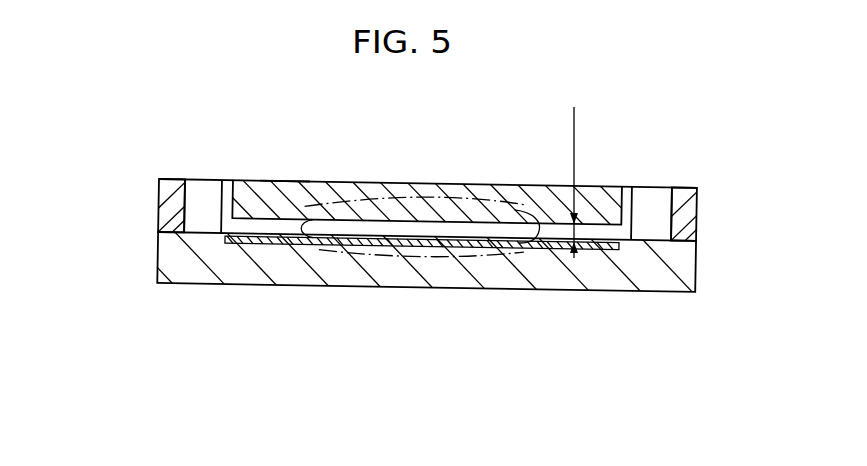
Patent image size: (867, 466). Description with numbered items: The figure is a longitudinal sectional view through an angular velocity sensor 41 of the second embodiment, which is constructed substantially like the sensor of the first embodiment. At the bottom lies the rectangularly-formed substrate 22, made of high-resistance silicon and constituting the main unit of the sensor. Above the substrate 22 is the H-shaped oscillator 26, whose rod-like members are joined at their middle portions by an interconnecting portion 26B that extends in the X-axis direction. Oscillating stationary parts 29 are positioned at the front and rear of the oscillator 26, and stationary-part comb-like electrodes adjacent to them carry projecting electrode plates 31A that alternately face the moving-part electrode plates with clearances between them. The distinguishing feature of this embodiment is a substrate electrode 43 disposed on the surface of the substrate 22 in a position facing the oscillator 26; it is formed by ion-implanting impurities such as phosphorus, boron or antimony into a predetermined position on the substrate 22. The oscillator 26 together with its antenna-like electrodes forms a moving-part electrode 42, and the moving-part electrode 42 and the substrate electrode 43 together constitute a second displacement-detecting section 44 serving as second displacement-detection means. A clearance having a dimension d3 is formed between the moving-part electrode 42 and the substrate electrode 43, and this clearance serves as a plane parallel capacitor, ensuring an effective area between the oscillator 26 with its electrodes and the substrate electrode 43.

The substrate 22 is at (610, 284).
The oscillator 26 is at (382, 182).
The interconnecting portion 26B is at (285, 180).
The oscillating stationary part 29 is at (162, 197).
The electrode plate 31A is at (205, 180).
The angular velocity sensor 41 is at (611, 113).
The moving-part electrode 42 is at (484, 175).
The substrate electrode 43 is at (355, 250).
The second displacement-detecting section 44 is at (483, 268).
The clearance dimension d3 is at (560, 182).